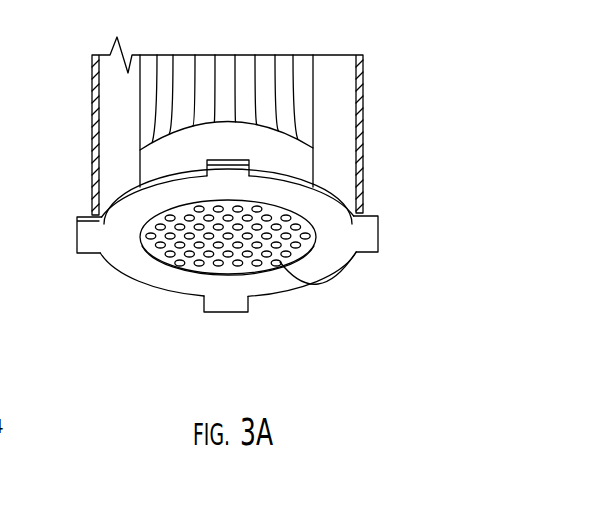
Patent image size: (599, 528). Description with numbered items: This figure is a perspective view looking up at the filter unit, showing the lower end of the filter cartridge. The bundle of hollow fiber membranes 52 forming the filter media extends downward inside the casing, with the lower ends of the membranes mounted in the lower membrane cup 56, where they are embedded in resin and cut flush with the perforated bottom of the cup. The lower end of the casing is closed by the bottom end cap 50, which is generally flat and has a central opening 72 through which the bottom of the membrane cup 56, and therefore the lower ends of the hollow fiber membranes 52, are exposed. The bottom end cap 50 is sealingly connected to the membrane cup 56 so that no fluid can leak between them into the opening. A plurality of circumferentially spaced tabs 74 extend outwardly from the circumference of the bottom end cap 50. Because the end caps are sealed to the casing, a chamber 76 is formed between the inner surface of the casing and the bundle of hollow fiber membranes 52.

The bottom end cap 50 is at (244, 192).
The hollow fiber membranes 52 is at (309, 82).
The lower membrane cup 56 is at (314, 153).
The central opening 72 is at (258, 295).
The tabs 74 is at (231, 174).
The chamber 76 is at (115, 107).